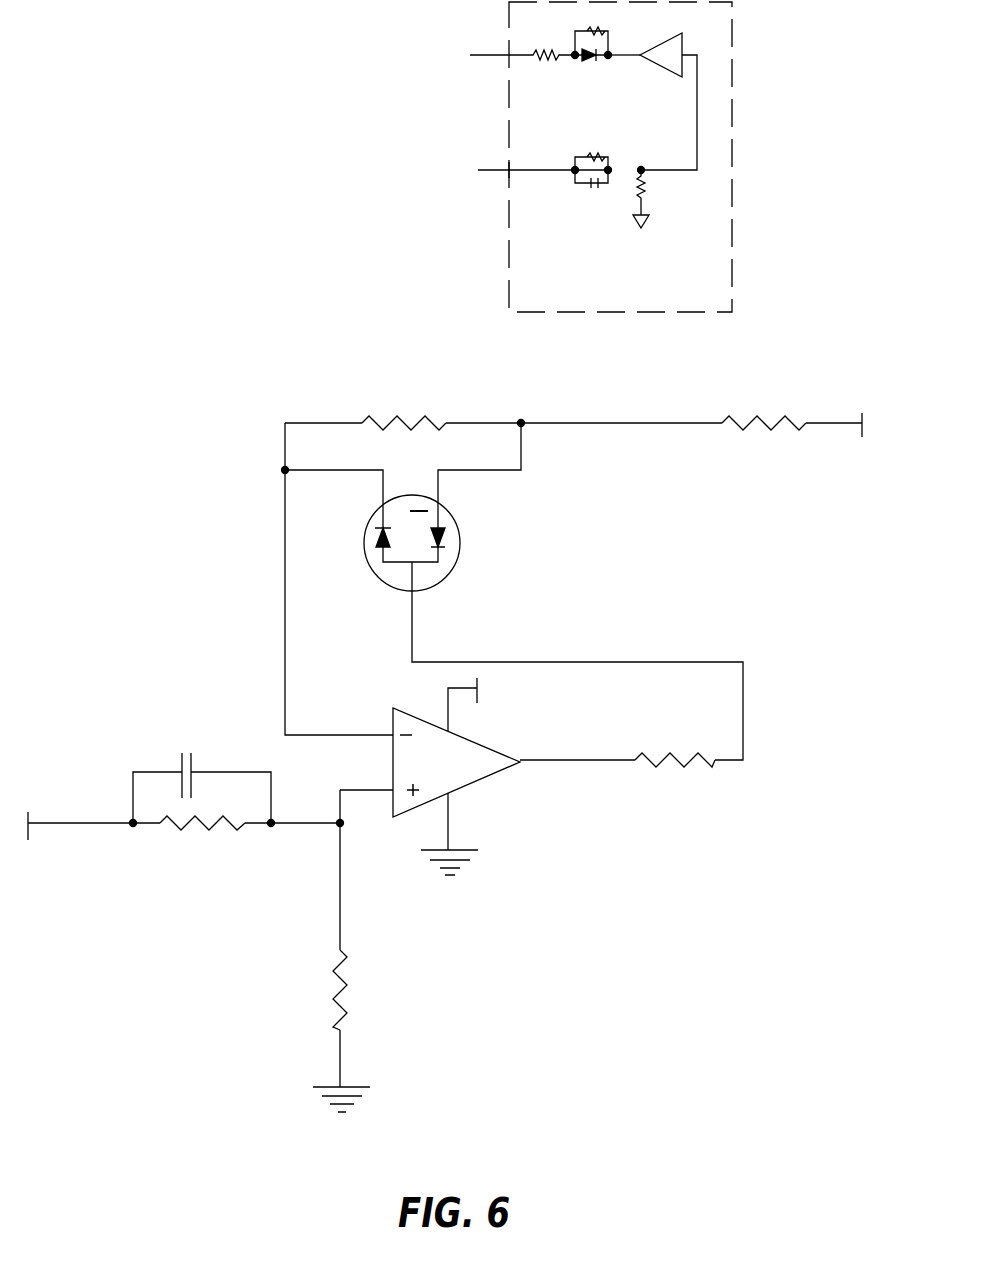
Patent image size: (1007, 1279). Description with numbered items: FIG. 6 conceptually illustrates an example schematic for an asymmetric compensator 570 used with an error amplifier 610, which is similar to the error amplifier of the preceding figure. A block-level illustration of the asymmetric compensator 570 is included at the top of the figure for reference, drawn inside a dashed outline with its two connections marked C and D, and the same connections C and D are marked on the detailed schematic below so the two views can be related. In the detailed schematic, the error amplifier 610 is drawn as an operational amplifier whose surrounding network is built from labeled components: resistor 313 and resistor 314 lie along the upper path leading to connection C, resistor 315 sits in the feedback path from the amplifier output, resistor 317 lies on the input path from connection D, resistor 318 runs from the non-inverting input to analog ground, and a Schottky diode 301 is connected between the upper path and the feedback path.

The asymmetric compensator 570 is at (592, 157).
The error amplifier 610 is at (449, 758).
The resistor R313 313 is at (431, 399).
The resistor R314 314 is at (804, 399).
The resistor R315 315 is at (711, 764).
The resistor R317 317 is at (200, 850).
The resistor R318 318 is at (422, 990).
The Schottky diode Q301 301 is at (484, 558).